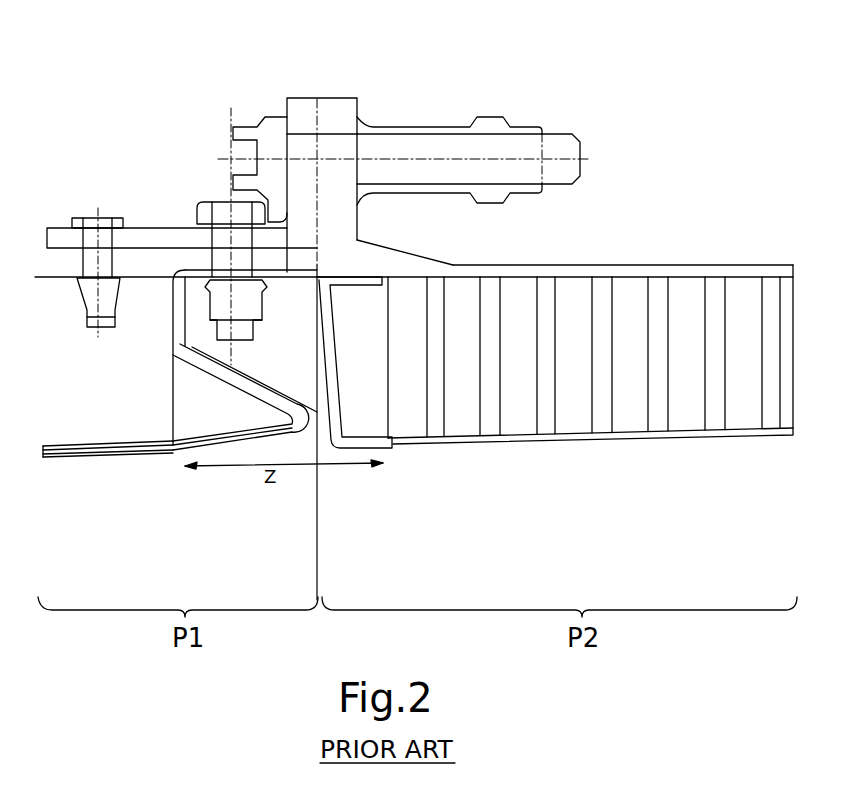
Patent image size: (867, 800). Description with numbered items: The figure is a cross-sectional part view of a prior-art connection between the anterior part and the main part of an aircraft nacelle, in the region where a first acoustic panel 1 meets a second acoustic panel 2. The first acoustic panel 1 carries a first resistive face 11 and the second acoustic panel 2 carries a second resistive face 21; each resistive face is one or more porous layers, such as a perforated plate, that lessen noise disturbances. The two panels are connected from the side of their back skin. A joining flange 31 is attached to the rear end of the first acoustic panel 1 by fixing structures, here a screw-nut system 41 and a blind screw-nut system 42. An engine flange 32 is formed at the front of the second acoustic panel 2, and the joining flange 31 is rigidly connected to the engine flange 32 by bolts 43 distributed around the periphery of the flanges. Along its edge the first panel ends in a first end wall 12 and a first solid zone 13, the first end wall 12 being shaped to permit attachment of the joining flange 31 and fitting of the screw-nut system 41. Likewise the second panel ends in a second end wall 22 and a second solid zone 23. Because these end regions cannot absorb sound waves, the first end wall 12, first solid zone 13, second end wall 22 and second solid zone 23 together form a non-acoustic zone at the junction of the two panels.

The first acoustic panel 1 is at (110, 422).
The first resistive face 11 is at (57, 457).
The first end wall 12 is at (257, 388).
The first solid zone 13 is at (196, 393).
The second acoustic panel 2 is at (630, 413).
The second resistive face 21 is at (728, 440).
The second end wall 22 is at (328, 343).
The second solid zone 23 is at (373, 398).
The joining flange 31 is at (170, 242).
The engine flange 32 is at (332, 118).
The screw-nut system 41 is at (227, 197).
The blind screw-nut system 42 is at (98, 217).
The bolts 43 is at (560, 145).